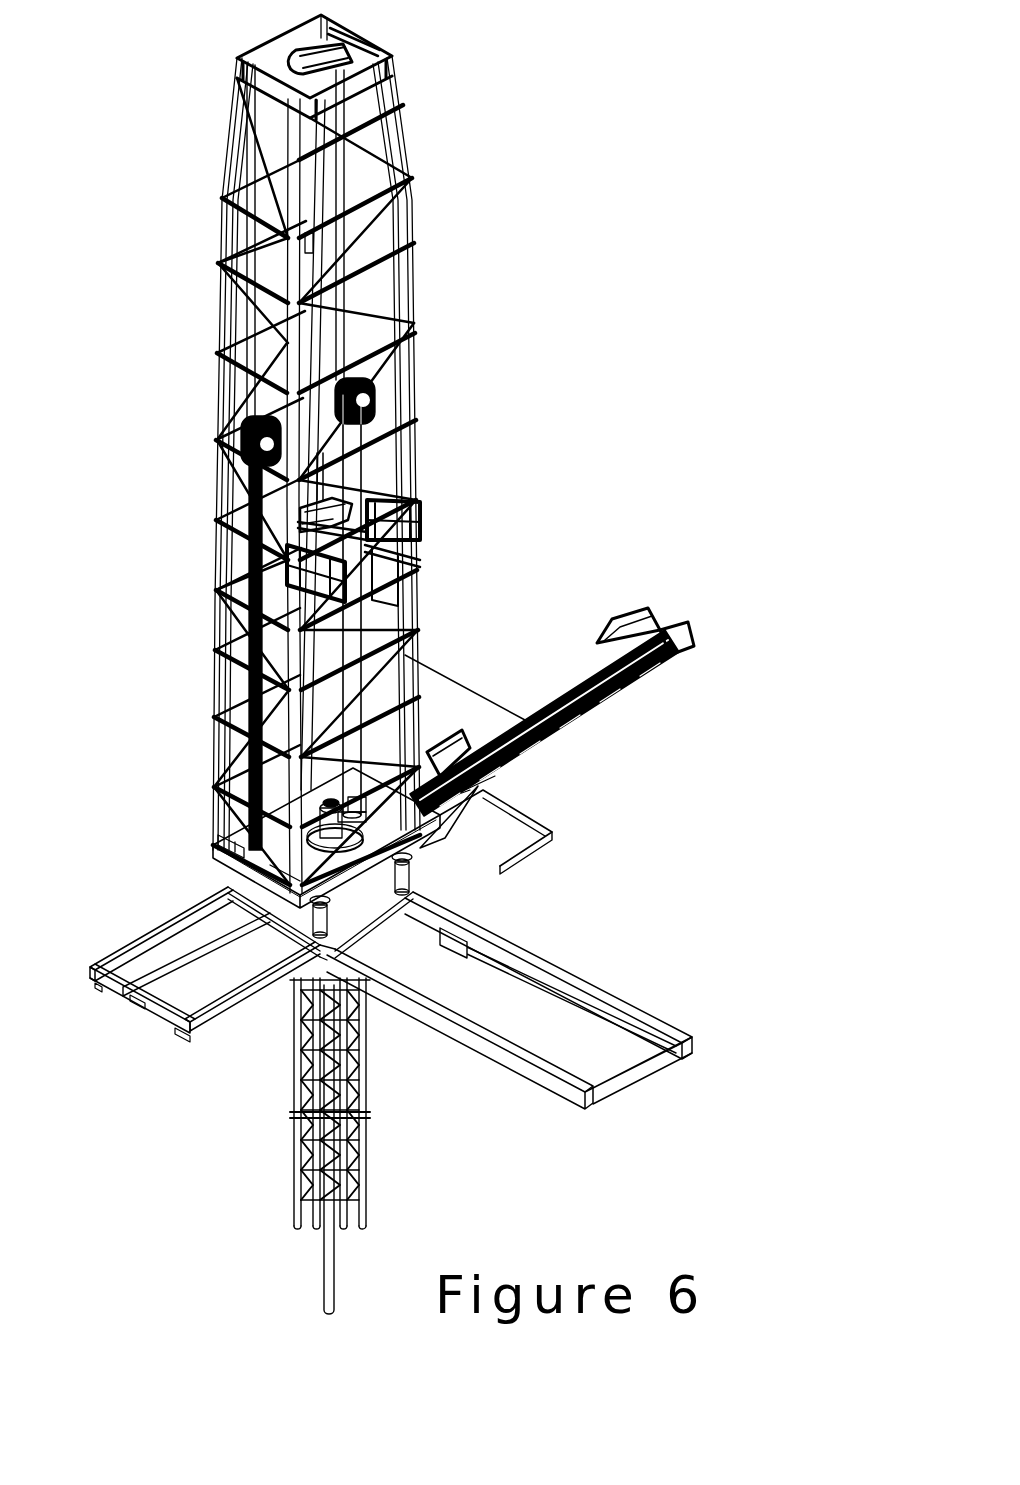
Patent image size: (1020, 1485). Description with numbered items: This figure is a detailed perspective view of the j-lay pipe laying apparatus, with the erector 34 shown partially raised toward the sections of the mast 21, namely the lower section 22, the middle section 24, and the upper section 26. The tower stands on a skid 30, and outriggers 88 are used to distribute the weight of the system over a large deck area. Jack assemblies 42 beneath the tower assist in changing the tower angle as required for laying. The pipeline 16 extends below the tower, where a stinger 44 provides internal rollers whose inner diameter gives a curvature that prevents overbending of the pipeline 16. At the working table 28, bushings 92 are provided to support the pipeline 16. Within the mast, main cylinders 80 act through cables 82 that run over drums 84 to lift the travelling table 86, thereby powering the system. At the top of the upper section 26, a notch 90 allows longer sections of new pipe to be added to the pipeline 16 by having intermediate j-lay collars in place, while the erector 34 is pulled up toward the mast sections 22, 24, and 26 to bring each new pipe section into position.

The pipeline 16 is at (335, 1268).
The mast 21 is at (472, 213).
The lower section 22 is at (420, 617).
The middle section 24 is at (413, 288).
The upper section 26 is at (407, 152).
The working table 28 is at (222, 866).
The skid 30 is at (532, 948).
The erector 34 is at (645, 620).
The jack assemblies 42 is at (505, 878).
The stinger 44 is at (362, 1192).
The main cylinders 80 is at (420, 562).
The cables 82 is at (367, 445).
The drums 84 is at (372, 390).
The travelling table 86 is at (397, 493).
The outriggers 88 is at (525, 817).
The notch 90 is at (378, 46).
The bushings 92 is at (342, 800).